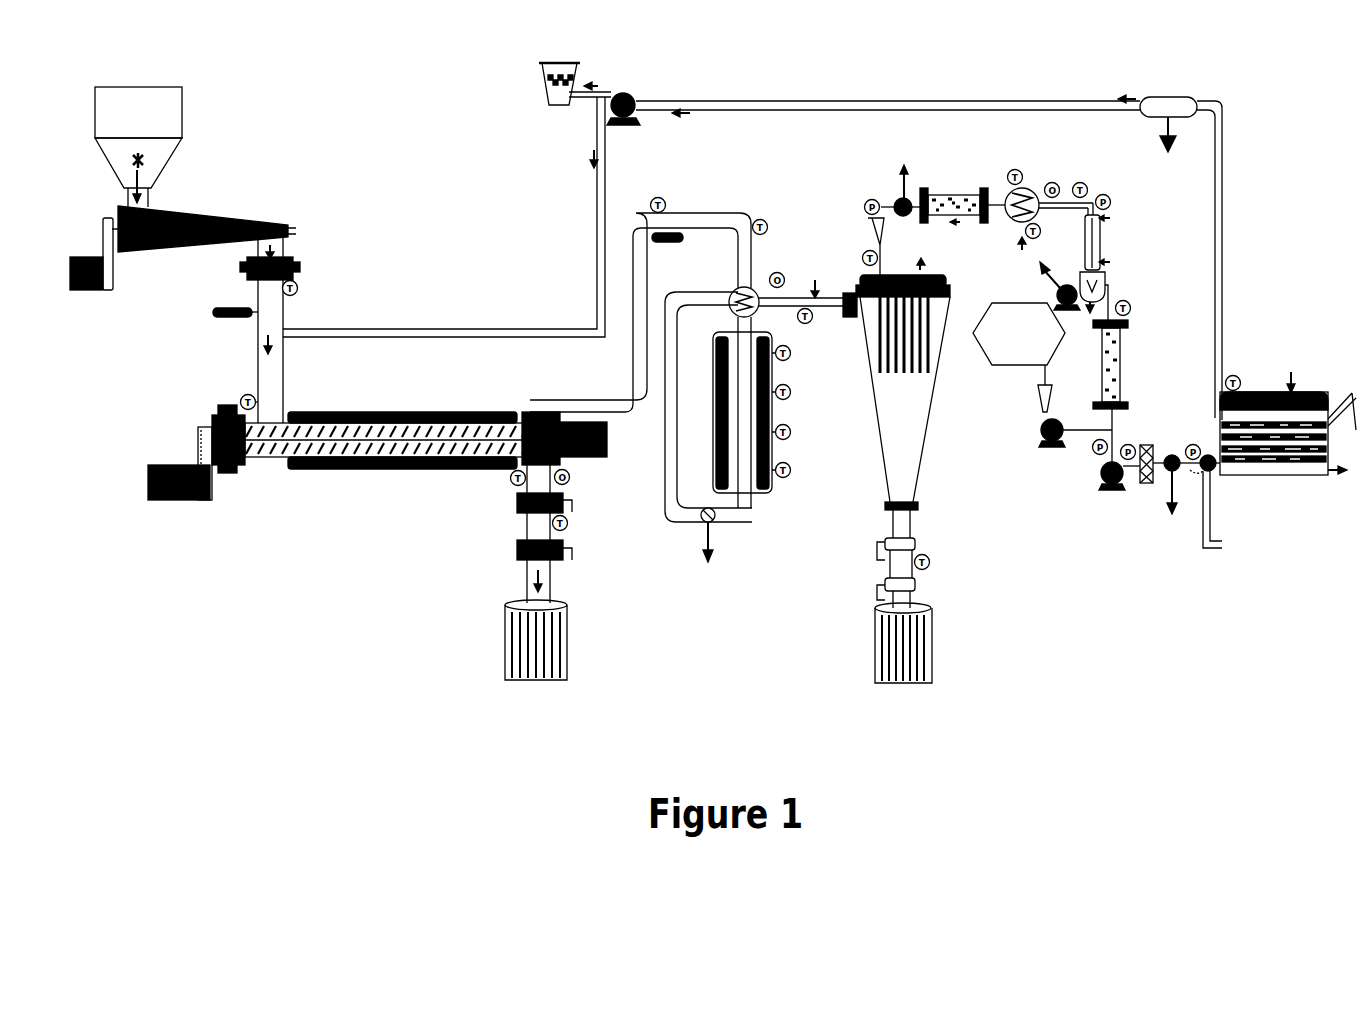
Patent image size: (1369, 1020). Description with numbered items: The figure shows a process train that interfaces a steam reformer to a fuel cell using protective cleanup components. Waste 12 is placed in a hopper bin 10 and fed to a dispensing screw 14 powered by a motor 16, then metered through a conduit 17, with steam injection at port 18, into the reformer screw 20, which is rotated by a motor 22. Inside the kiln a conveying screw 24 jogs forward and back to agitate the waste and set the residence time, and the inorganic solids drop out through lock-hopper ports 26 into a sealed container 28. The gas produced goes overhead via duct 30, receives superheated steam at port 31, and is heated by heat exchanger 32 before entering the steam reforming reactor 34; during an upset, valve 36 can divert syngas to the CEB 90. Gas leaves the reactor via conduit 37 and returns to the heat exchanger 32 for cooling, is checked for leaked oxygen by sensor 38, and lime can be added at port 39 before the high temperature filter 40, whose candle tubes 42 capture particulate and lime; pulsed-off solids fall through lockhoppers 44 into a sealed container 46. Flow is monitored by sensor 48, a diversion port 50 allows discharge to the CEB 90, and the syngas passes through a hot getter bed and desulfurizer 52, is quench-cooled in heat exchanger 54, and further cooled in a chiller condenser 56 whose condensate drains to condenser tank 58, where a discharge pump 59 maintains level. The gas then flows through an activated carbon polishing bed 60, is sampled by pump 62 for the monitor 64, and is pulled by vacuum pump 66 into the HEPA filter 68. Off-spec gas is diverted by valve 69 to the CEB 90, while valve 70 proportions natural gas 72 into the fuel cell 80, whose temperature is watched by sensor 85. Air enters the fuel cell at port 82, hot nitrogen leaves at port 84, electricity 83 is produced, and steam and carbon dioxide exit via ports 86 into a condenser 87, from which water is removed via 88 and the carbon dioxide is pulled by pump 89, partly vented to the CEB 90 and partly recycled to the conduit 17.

The hopper bin 10 is at (188, 110).
The waste 12 is at (144, 161).
The dispensing screw 14 is at (200, 212).
The motor 16 is at (90, 291).
The conduit 17 is at (276, 302).
The steam injection 18 is at (226, 320).
The reformer screw 20 is at (302, 468).
The motor 22 is at (163, 502).
The conveying screw 24 is at (388, 458).
The lock-hopper ports 26 is at (515, 552).
The sealed container 28 is at (513, 660).
The duct 30 is at (634, 382).
The port 31 is at (667, 235).
The heat exchanger 32 is at (753, 292).
The steam reforming reactor 34 is at (741, 483).
The valve 36 is at (703, 529).
The conduit 37 is at (666, 449).
The sensor 38 is at (787, 272).
The port 39 is at (829, 276).
The high temperature filter 40 is at (870, 322).
The candle tubes 42 is at (900, 368).
The lockhoppers 44 is at (883, 568).
The sealed container 46 is at (890, 664).
The sensor 48 is at (867, 201).
The diversion port 50 is at (900, 197).
The hot getter bed and desulfurizer 52 is at (940, 195).
The heat exchanger 54 is at (1030, 190).
The chiller condenser 56 is at (1100, 226).
The condenser tank 58 is at (1103, 281).
The discharge pump 59 is at (1050, 287).
The activated carbon polishing bed 60 is at (1121, 362).
The pump 62 is at (1046, 443).
The monitor 64 is at (1030, 352).
The vacuum pump 66 is at (1105, 486).
The HEPA filter 68 is at (1143, 486).
The valve 69 is at (1172, 455).
The valve 70 is at (1205, 474).
The natural gas 72 is at (1225, 548).
The fuel cell 80 is at (1241, 456).
The port 82 is at (1333, 476).
The electricity 83 is at (1348, 424).
The port 84 is at (1294, 379).
The sensor 85 is at (1237, 376).
The ports 86 is at (1224, 245).
The condenser 87 is at (1163, 104).
The water removal 88 is at (1160, 128).
The pump 89 is at (631, 95).
The CEB 90 is at (546, 86).